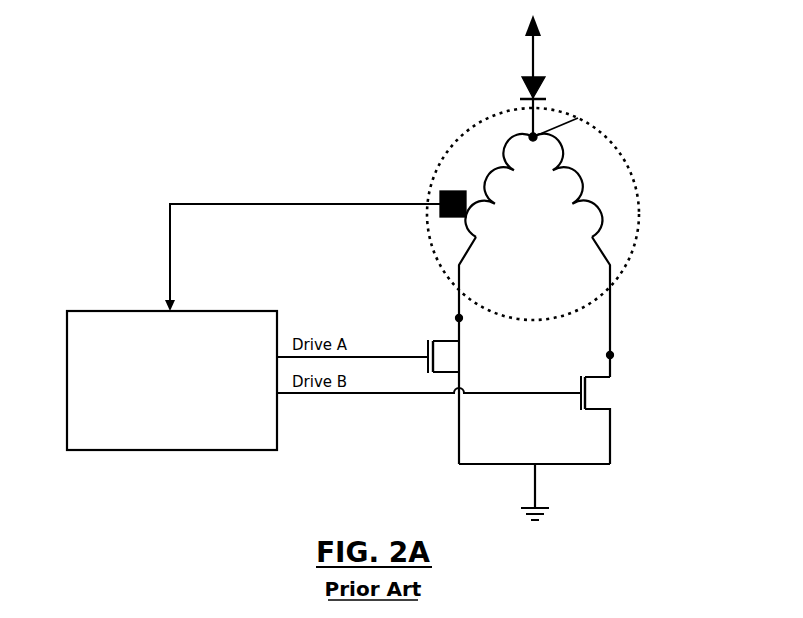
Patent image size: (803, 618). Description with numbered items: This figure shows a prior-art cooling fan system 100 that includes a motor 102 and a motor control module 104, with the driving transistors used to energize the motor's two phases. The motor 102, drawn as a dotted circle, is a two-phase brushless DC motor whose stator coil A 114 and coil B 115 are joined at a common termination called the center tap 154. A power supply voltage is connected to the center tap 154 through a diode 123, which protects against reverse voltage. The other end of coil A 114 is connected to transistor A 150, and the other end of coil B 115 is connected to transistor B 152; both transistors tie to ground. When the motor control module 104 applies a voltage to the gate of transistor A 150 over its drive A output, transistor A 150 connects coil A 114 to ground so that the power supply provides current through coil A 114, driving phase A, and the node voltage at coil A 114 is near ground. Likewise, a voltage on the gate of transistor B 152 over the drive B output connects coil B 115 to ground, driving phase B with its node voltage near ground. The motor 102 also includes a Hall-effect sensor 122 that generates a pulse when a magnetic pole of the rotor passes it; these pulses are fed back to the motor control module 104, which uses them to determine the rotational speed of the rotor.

The cooling fan system 100 is at (210, 74).
The motor 102 is at (637, 246).
The motor control module 104 is at (67, 381).
The coil A 114 is at (492, 178).
The coil B 115 is at (598, 218).
The Hall-effect sensor 122 is at (440, 210).
The diode 123 is at (522, 82).
The transistor A 150 is at (432, 340).
The transistor B 152 is at (583, 408).
The center tap 154 is at (578, 118).